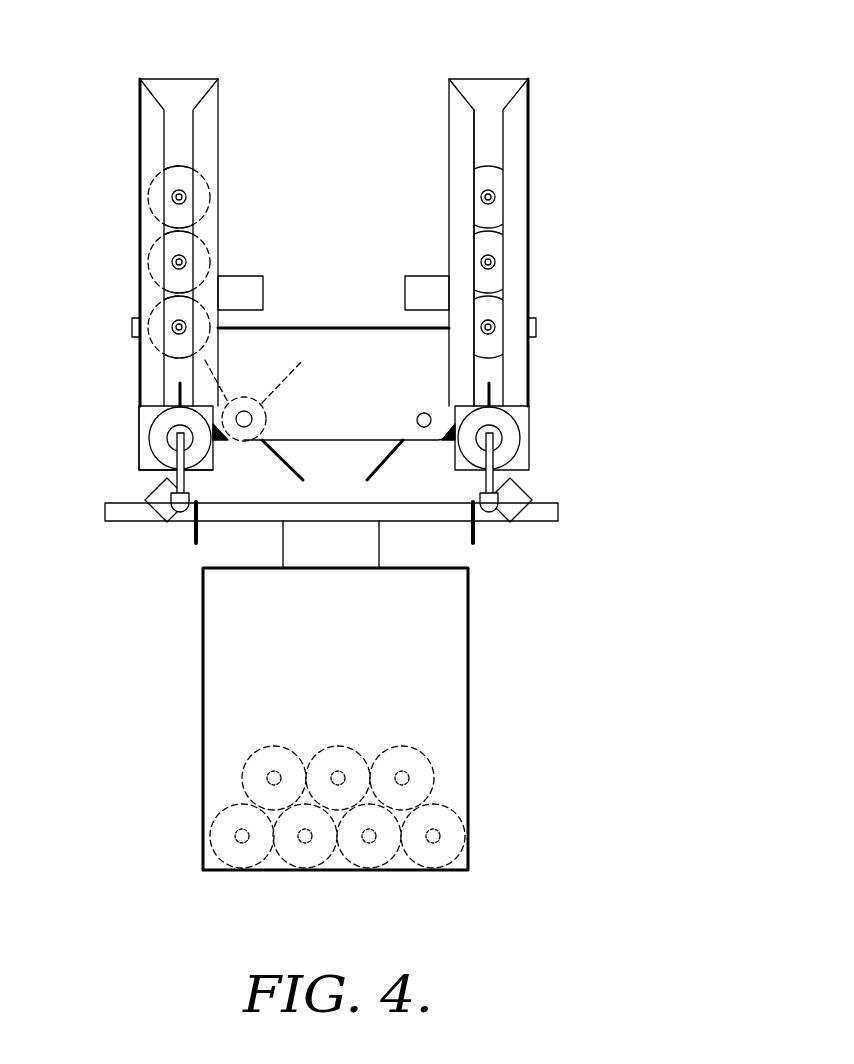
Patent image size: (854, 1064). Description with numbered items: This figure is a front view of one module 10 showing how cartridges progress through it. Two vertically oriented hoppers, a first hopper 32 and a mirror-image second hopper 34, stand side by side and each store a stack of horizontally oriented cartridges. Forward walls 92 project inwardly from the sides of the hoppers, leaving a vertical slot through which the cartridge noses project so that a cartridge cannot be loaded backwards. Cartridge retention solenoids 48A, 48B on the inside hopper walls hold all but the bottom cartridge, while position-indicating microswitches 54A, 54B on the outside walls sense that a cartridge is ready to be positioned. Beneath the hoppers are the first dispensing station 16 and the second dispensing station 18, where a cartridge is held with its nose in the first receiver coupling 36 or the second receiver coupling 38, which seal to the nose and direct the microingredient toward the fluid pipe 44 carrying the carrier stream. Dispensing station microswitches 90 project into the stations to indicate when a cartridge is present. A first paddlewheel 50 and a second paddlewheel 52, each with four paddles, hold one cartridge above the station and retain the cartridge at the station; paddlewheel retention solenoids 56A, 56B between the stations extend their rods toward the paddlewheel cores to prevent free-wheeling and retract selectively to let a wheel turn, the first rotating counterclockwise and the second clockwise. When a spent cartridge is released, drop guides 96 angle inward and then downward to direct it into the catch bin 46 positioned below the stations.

The module 10 is at (670, 163).
The first dispensing station 16 is at (118, 404).
The second dispensing station 18 is at (552, 404).
The first hopper 32 is at (218, 96).
The second hopper 34 is at (449, 96).
The first receiver coupling 36 is at (158, 432).
The second receiver coupling 38 is at (500, 426).
The fluid pipe 44 is at (548, 522).
The catch bin 46 is at (468, 715).
The cartridge retention solenoid 48A is at (252, 276).
The cartridge retention solenoid 48B is at (405, 293).
The first paddlewheel 50 is at (288, 378).
The second paddlewheel 52 is at (380, 470).
The position-indicating microswitch 54A is at (132, 326).
The position-indicating microswitch 54B is at (536, 326).
The paddlewheel retention solenoid 56A is at (155, 530).
The paddlewheel retention solenoid 56B is at (515, 494).
The dispensing station microswitch 90 is at (140, 466).
The forward wall 92 is at (516, 135).
The drop guide 96 is at (476, 545).